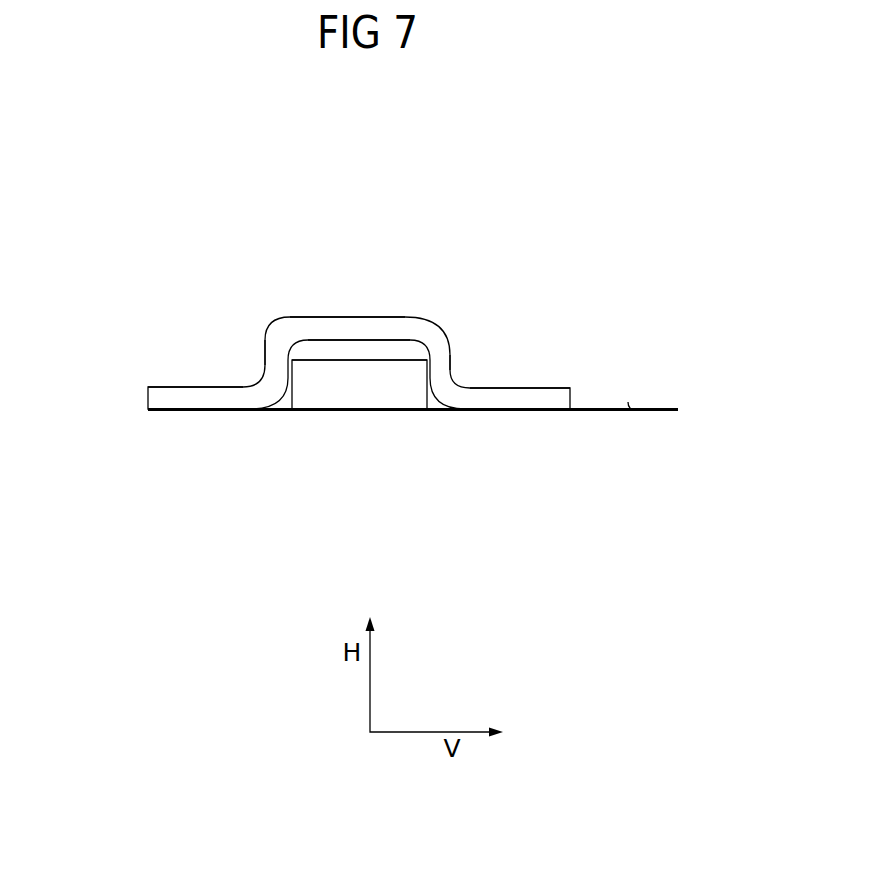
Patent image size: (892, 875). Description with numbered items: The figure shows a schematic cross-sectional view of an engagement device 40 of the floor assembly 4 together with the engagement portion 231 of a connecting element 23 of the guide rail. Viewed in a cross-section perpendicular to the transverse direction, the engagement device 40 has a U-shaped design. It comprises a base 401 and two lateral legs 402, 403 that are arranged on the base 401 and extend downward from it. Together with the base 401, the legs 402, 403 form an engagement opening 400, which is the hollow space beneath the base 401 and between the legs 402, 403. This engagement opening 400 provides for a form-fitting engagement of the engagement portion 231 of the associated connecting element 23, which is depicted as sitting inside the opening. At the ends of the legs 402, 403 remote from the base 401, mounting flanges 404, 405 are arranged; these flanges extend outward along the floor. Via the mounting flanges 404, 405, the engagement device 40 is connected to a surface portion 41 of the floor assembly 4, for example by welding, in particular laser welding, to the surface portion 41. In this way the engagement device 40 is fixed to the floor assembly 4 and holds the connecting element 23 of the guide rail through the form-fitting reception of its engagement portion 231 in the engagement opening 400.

The floor assembly 4 is at (652, 417).
The engagement device 40 is at (416, 317).
The engagement opening 400 is at (330, 352).
The base 401 is at (365, 317).
The lateral leg 402 is at (270, 363).
The lateral leg 403 is at (442, 367).
The mounting flange 404 is at (183, 404).
The mounting flange 405 is at (538, 398).
The surface portion 41 is at (628, 402).
The connecting element 23 is at (342, 418).
The engagement portion 231 is at (390, 397).